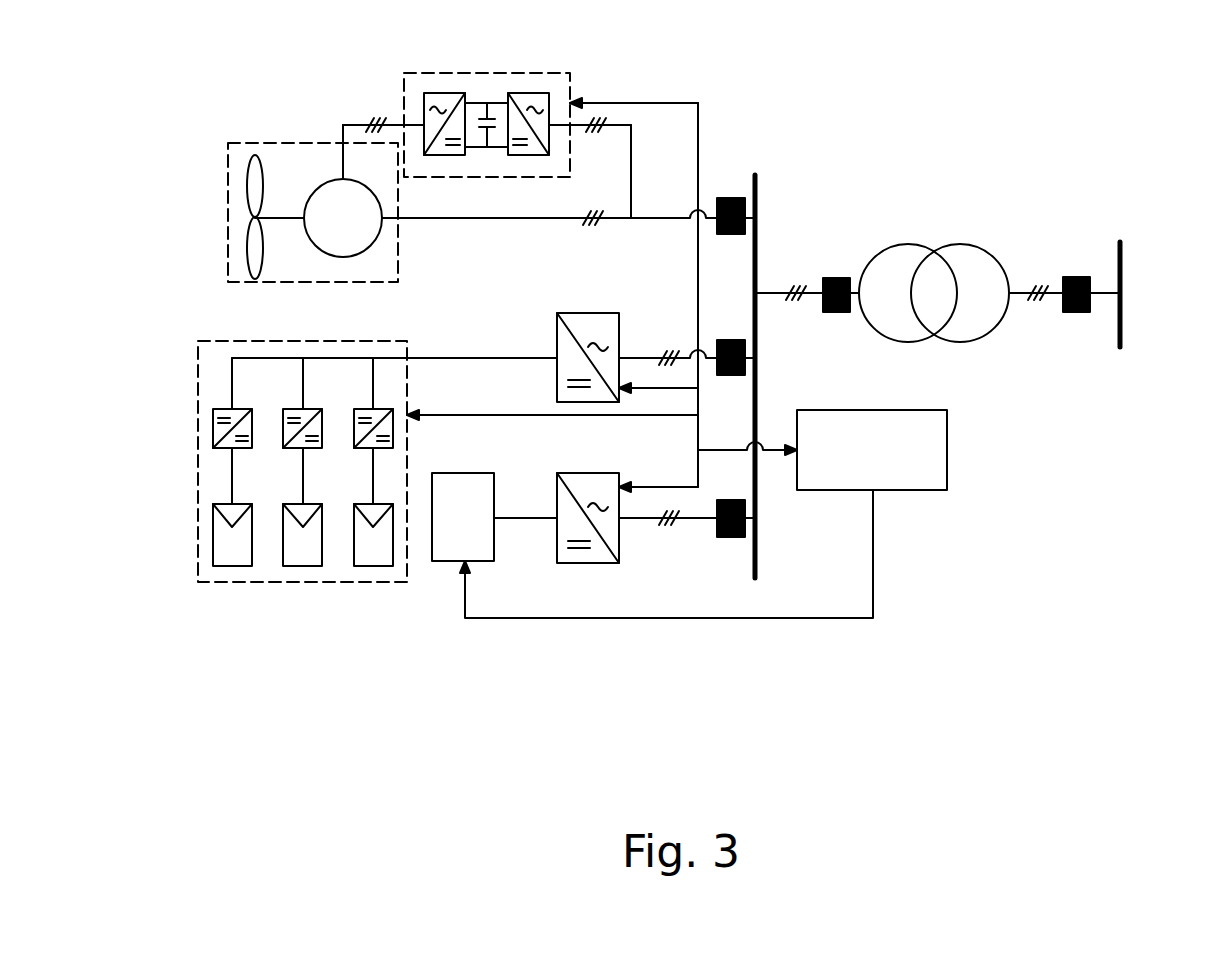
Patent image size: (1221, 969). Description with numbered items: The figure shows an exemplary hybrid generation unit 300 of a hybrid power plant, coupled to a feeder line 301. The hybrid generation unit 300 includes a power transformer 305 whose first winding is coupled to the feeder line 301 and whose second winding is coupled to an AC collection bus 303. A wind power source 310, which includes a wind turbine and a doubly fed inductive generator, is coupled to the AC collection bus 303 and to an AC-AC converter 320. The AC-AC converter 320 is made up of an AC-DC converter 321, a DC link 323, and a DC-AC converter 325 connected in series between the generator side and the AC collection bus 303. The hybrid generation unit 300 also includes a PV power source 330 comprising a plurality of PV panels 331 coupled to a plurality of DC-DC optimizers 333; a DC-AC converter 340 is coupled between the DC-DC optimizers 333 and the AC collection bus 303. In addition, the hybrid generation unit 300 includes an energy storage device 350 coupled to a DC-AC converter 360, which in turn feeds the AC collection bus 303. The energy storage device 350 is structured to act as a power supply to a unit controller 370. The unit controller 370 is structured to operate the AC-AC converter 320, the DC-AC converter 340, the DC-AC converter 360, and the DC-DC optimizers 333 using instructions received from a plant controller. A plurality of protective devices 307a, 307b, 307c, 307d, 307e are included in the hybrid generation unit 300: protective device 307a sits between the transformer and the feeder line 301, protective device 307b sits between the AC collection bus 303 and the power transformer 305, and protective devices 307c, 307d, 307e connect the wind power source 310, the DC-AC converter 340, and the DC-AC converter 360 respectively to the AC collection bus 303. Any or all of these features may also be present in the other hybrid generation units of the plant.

The hybrid generation unit 300 is at (538, 638).
The feeder line 301 is at (1122, 262).
The AC collection bus 303 is at (758, 183).
The power transformer 305 is at (933, 246).
The protective device 307a is at (1080, 277).
The protective device 307b is at (838, 278).
The protective device 307c is at (735, 198).
The protective device 307d is at (735, 340).
The protective device 307e is at (735, 500).
The wind power source 310 is at (267, 143).
The AC-AC converter 320 is at (487, 114).
The AC-DC converter 321 is at (442, 93).
The DC link 323 is at (494, 147).
The DC-AC converter 325 is at (544, 93).
The PV power source 330 is at (354, 435).
The PV panels 331 is at (211, 534).
The DC-DC optimizers 333 is at (211, 438).
The DC-AC converter 340 is at (557, 320).
The energy storage device 350 is at (458, 473).
The DC-AC converter 360 is at (574, 473).
The unit controller 370 is at (949, 420).